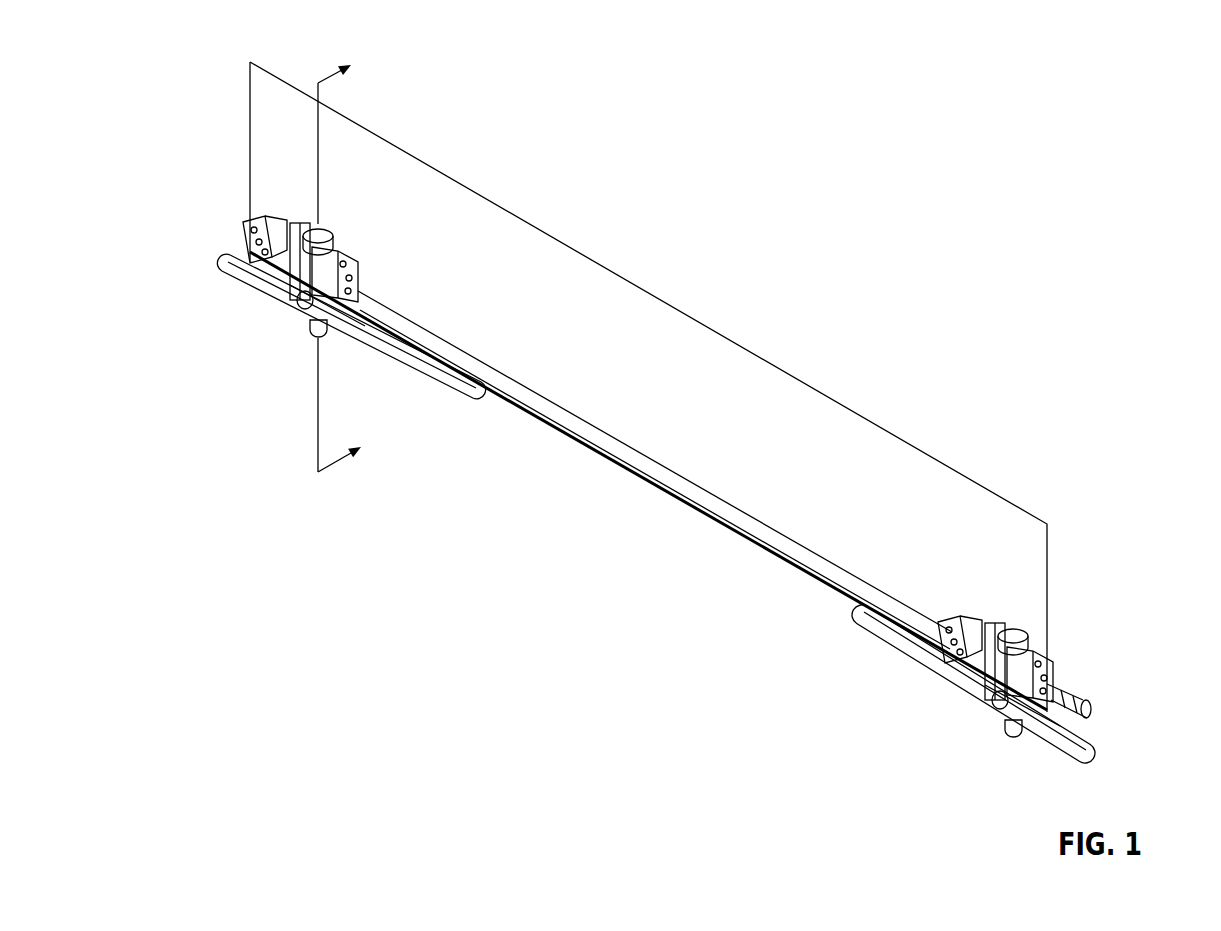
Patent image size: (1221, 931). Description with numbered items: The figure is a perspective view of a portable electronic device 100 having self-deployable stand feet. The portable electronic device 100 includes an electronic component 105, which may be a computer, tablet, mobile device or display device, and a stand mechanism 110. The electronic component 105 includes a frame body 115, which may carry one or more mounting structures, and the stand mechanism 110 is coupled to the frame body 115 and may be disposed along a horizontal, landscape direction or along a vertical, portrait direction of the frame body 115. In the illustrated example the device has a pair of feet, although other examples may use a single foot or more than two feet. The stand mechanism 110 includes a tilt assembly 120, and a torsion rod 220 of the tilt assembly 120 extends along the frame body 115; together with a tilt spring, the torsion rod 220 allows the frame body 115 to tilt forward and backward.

The portable electronic device 100 is at (885, 211).
The electronic component 105 is at (588, 256).
The stand mechanism 110 is at (272, 320).
The frame body 115 is at (250, 181).
The tilt assembly 120 is at (1096, 737).
The torsion rod 220 is at (760, 524).